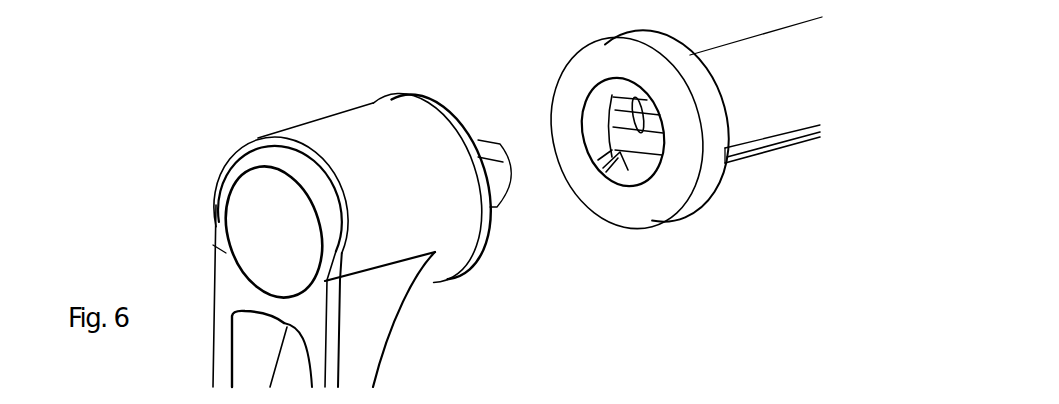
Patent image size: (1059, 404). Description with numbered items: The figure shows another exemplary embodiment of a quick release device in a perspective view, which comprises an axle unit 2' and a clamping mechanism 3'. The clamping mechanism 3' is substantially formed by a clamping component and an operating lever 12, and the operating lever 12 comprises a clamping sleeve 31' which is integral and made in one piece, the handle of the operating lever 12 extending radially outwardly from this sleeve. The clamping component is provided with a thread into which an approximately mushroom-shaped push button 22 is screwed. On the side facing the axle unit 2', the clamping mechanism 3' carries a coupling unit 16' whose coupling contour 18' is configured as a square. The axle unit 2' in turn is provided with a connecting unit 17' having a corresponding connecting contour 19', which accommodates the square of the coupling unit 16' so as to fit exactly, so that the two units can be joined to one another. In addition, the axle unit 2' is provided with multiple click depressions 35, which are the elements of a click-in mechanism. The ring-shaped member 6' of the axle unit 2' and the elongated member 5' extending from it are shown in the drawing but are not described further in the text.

The clamping mechanism 3' is at (238, 211).
The clamping sleeve 31' is at (334, 165).
The push button 22 is at (250, 210).
The operating lever 12 is at (218, 320).
The coupling contour 18' is at (473, 194).
The coupling unit 16' is at (491, 123).
The ring 6' is at (626, 172).
The axle unit 2' is at (697, 163).
The connecting unit 17' is at (572, 116).
The connecting contour 19' is at (693, 105).
The click depressions 35 is at (608, 102).
The shaft 5' is at (758, 111).